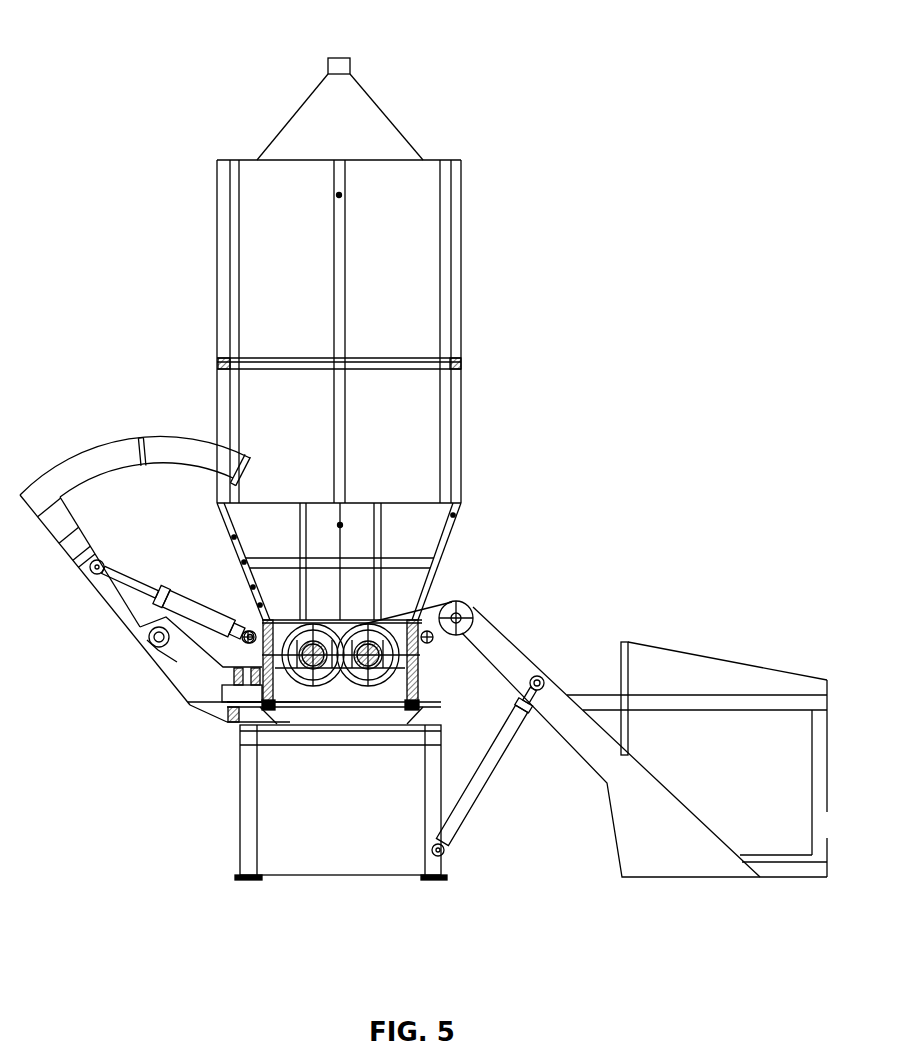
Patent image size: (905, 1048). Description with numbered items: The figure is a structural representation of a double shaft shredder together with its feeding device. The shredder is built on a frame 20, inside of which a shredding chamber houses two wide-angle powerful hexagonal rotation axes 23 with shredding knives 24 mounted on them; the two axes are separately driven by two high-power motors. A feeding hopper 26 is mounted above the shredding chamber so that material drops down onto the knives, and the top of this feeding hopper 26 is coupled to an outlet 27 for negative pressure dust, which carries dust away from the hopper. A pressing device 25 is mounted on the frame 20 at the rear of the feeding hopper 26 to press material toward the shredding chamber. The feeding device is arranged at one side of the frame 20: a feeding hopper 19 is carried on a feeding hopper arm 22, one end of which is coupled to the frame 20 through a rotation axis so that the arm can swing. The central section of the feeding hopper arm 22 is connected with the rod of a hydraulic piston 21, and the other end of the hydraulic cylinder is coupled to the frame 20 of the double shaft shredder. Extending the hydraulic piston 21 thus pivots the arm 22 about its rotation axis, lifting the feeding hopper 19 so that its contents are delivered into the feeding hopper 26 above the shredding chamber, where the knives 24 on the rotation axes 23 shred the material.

The feeding hopper 19 is at (722, 683).
The frame 20 is at (250, 823).
The hydraulic piston 21 is at (450, 835).
The feeding hopper arm 22 is at (513, 665).
The hexagonal rotation axes 23 is at (423, 617).
The shredding knives 24 is at (395, 620).
The pressing device 25 is at (138, 462).
The feeding hopper 26 is at (380, 287).
The outlet for negative pressure dust 27 is at (353, 131).